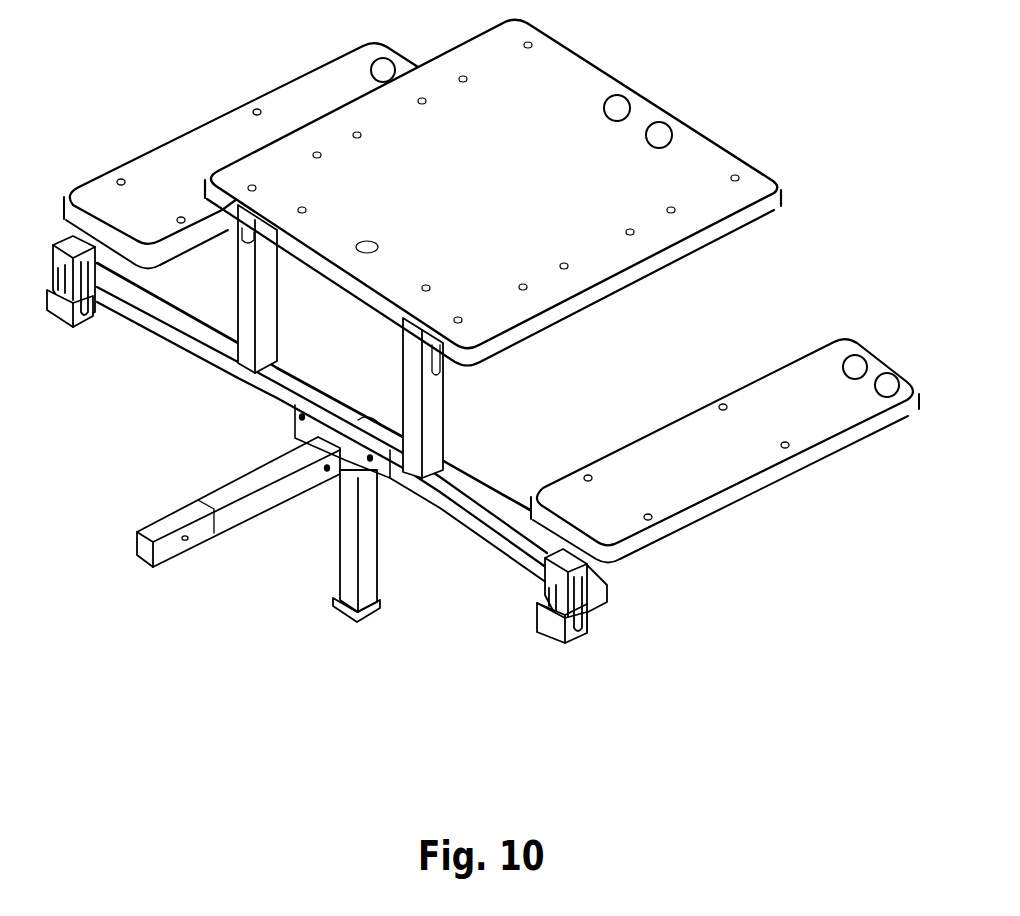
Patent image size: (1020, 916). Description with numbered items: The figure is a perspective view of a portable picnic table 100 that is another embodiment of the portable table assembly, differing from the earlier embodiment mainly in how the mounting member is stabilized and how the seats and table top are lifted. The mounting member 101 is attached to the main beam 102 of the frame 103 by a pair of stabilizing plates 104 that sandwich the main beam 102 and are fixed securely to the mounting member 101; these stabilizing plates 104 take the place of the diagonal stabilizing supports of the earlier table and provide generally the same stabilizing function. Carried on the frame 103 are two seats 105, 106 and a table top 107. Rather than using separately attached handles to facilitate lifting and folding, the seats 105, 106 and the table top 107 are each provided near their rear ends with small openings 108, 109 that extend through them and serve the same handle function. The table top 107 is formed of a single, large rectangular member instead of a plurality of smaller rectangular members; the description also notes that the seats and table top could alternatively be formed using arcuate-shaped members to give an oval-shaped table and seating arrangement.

The portable picnic table 100 is at (193, 672).
The mounting member 101 is at (227, 483).
The main beam 102 is at (217, 363).
The frame 103 is at (193, 327).
The stabilizing plates 104 is at (293, 418).
The seat 105 is at (217, 127).
The seat 106 is at (760, 385).
The table top 107 is at (552, 64).
The openings 108 is at (383, 65).
The openings 109 is at (663, 125).